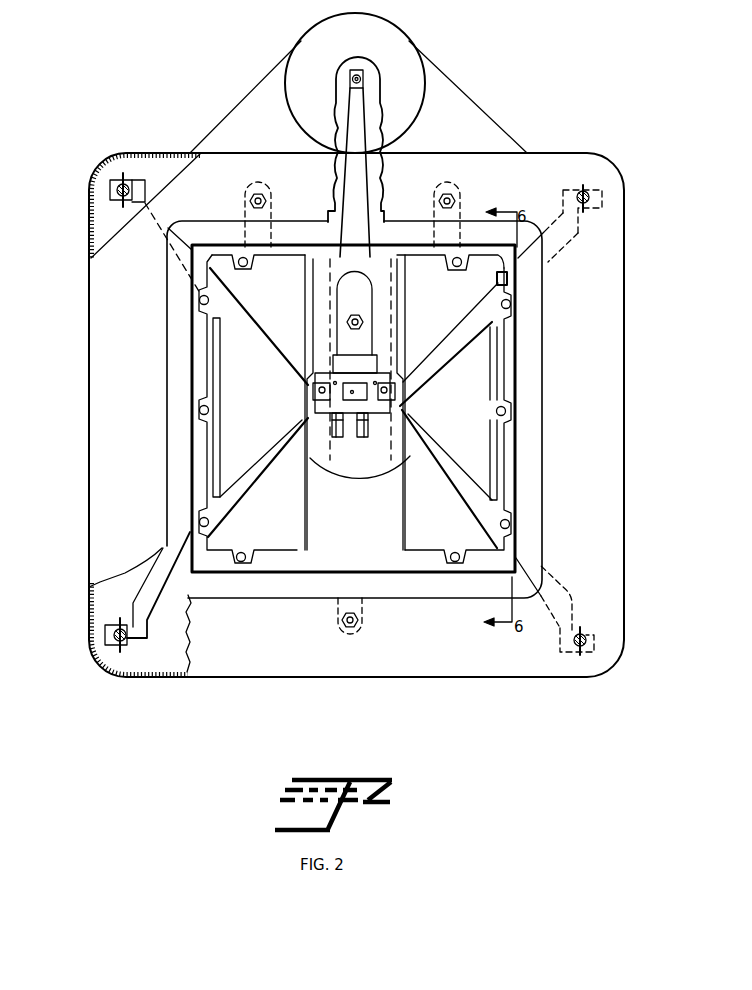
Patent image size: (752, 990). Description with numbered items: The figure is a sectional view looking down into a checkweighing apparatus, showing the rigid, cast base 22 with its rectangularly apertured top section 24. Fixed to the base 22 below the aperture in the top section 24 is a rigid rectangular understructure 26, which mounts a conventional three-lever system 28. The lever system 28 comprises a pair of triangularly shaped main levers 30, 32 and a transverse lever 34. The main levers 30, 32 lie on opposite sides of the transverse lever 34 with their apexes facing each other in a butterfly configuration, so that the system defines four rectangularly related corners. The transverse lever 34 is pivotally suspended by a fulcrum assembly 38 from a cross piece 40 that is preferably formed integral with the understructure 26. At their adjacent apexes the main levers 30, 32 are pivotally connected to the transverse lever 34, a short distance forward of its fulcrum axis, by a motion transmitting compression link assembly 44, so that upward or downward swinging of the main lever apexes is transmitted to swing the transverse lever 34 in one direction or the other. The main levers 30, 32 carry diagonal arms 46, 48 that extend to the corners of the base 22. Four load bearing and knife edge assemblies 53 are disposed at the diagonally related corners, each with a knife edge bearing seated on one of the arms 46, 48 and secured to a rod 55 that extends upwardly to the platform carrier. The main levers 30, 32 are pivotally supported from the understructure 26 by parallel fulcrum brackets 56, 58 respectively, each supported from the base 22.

The base 22 is at (100, 165).
The top section 24 is at (588, 163).
The understructure 26 is at (409, 254).
The three-lever system 28 is at (446, 320).
The main lever 30 is at (450, 361).
The main lever 32 is at (254, 346).
The transverse lever 34 is at (358, 357).
The fulcrum assembly 38 is at (360, 301).
The cross piece 40 is at (403, 410).
The compression link assembly 44 is at (337, 440).
The diagonal arm 46 is at (556, 257).
The diagonal arm 48 is at (148, 183).
The load bearing and knife edge assembly 53 is at (128, 168).
The rod 55 is at (112, 186).
The fulcrum bracket 56 is at (489, 448).
The fulcrum bracket 58 is at (220, 436).